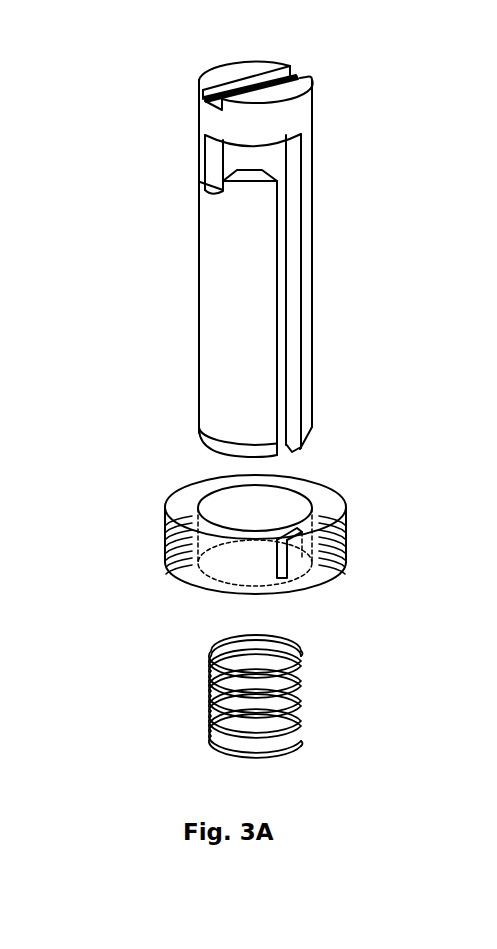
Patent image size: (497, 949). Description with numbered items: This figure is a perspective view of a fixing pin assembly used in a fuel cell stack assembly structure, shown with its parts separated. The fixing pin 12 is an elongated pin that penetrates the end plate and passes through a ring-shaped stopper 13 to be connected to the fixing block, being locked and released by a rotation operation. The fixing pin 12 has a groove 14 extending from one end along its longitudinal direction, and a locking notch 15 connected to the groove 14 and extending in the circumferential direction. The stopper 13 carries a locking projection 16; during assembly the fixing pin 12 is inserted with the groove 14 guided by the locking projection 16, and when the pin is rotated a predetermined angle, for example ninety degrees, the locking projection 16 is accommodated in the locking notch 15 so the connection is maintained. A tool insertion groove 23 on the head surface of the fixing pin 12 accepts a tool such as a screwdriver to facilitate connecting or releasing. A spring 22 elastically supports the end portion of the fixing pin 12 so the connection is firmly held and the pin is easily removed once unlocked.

The fixing pin 12 is at (197, 226).
The ring-shaped stopper 13 is at (173, 494).
The groove 14 is at (283, 235).
The locking notch 15 is at (223, 172).
The locking projection 16 is at (293, 562).
The spring 22 is at (210, 652).
The tool insertion groove 23 is at (243, 82).